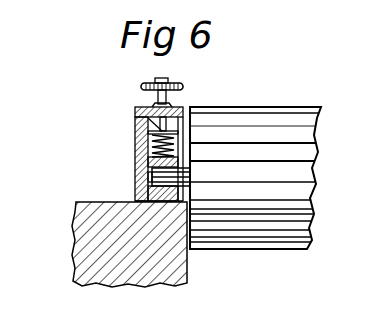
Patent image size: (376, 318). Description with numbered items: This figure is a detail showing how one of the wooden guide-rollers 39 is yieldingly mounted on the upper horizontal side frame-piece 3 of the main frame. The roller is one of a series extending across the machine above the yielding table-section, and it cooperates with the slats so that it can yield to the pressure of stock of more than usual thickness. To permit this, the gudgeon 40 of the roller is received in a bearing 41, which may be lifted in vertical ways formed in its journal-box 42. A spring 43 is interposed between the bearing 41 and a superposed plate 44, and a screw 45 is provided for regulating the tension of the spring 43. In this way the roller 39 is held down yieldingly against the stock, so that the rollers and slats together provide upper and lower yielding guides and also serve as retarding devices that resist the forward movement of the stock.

The upper horizontal member of the main frame 3 is at (72, 247).
The wooden guide-roller 39 is at (272, 115).
The gudgeon 40 is at (148, 182).
The bearing 41 is at (148, 194).
The journal-box 42 is at (135, 125).
The spring 43 is at (158, 143).
The superposed plate 44 is at (135, 110).
The screw 45 is at (168, 81).